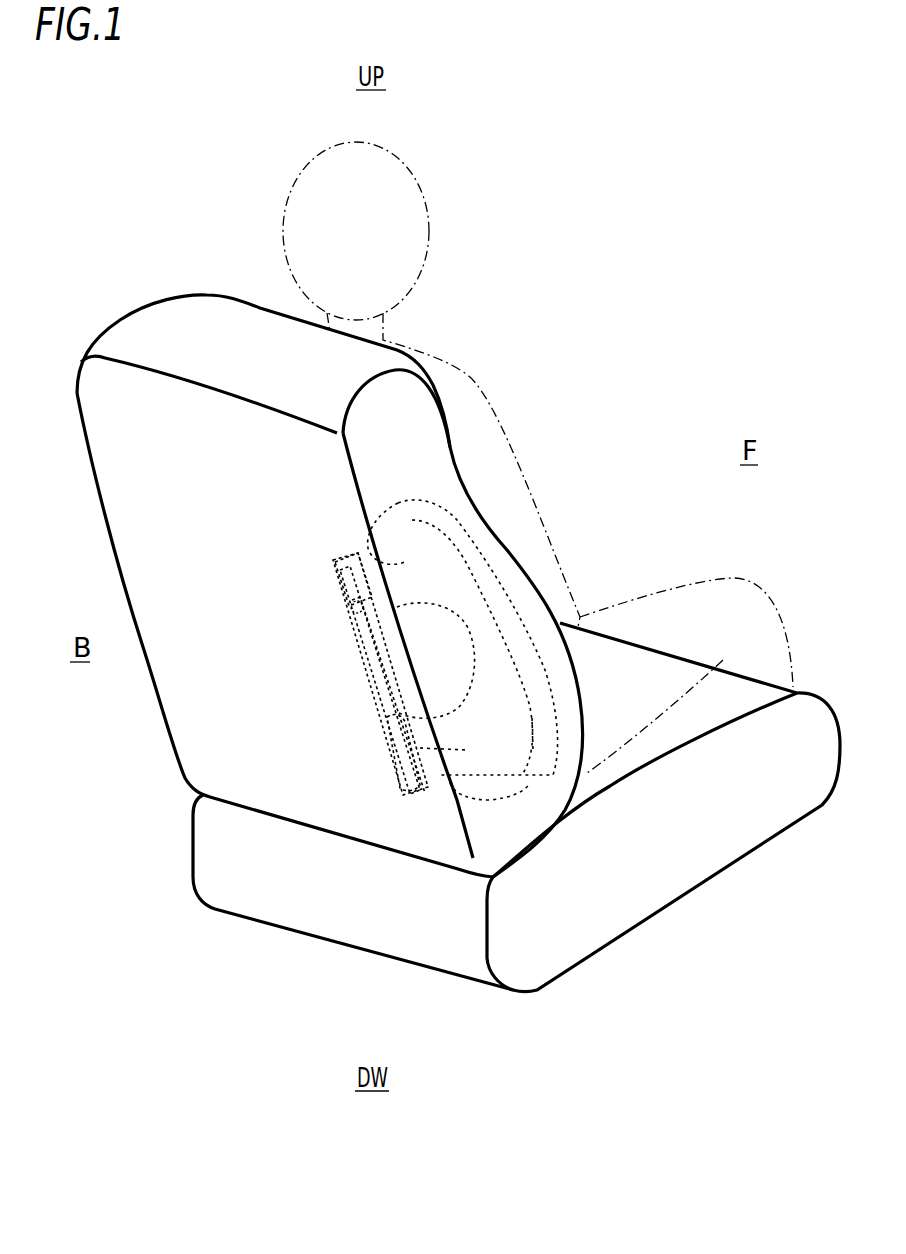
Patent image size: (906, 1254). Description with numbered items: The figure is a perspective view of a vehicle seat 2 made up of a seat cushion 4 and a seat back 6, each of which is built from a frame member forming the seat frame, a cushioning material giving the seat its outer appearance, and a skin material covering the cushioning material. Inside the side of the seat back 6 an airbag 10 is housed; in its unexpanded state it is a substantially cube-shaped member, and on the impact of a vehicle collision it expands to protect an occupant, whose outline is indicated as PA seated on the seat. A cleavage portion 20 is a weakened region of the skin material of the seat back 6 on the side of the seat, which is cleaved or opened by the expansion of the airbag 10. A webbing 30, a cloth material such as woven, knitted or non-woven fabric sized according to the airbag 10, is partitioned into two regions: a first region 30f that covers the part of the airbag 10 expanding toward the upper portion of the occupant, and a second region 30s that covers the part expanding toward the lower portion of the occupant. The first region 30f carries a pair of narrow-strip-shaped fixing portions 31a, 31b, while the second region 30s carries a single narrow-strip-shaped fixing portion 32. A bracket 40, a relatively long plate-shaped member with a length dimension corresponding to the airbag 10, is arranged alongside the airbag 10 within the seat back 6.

The vehicle seat 2 is at (231, 283).
The seat cushion 4 is at (390, 908).
The seat back 6 is at (173, 482).
The airbag 10 is at (434, 481).
The cleavage portion 20 is at (398, 503).
The webbing 30 is at (248, 522).
The first region 30f is at (440, 542).
The second region 30s is at (528, 716).
The fixing portion 31a is at (357, 552).
The fixing portion 31b is at (356, 590).
The fixing portion 32 is at (440, 774).
The bracket 40 is at (370, 652).
The passenger PA is at (403, 157).